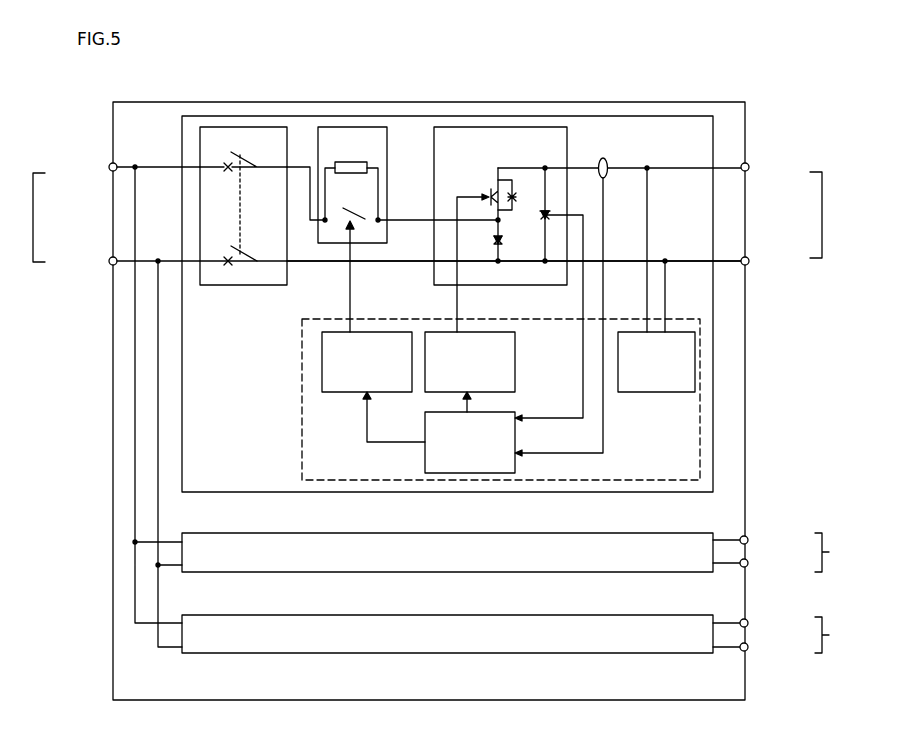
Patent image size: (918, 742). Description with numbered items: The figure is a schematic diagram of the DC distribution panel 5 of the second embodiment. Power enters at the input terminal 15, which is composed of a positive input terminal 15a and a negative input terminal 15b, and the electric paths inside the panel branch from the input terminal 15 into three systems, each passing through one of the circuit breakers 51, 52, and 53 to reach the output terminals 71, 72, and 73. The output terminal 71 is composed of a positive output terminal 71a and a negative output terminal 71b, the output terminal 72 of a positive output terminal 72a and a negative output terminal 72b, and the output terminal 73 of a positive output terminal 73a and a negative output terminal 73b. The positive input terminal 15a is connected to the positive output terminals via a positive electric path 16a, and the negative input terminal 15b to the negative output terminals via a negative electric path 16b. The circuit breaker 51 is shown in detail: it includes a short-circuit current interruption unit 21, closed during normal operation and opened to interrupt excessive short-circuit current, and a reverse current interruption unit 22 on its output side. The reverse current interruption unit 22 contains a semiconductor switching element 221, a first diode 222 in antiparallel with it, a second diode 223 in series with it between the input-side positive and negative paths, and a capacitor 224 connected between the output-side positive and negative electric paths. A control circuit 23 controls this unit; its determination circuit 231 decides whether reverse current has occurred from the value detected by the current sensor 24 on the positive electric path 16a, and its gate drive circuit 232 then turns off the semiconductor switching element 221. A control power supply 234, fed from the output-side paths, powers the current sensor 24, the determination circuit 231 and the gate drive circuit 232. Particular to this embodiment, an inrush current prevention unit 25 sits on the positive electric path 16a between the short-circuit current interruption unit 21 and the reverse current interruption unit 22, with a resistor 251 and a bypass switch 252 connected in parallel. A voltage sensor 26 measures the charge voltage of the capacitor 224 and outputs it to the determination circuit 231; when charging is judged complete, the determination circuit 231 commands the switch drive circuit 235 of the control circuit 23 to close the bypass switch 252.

The DC distribution panel 5 is at (678, 101).
The input terminal 15 is at (40, 218).
The positive input terminal 15a is at (108, 168).
The negative input terminal 15b is at (108, 262).
The positive electric path 16a is at (408, 217).
The negative electric path 16b is at (416, 263).
The short-circuit current interruption unit 21 is at (237, 287).
The reverse current interruption unit 22 is at (502, 228).
The semiconductor switching element 221 is at (488, 177).
The first diode 222 is at (519, 177).
The second diode 223 is at (503, 243).
The capacitor 224 is at (548, 212).
The control circuit 23 is at (476, 399).
The determination circuit 231 is at (517, 437).
The gate drive circuit 232 is at (517, 350).
The control power supply 234 is at (652, 394).
The switch drive circuit 235 is at (340, 396).
The current sensor 24 is at (610, 162).
The inrush current prevention unit 25 is at (355, 216).
The resistor 251 is at (358, 163).
The bypass switch 252 is at (364, 230).
The voltage sensor 26 is at (590, 220).
The circuit breaker 51 is at (258, 493).
The circuit breaker 52 is at (258, 573).
The circuit breaker 53 is at (258, 655).
The output terminal 71 is at (822, 213).
The positive output terminal 71a is at (750, 167).
The negative output terminal 71b is at (750, 261).
The output terminal 72 is at (837, 552).
The positive output terminal 72a is at (750, 540).
The negative output terminal 72b is at (750, 563).
The output terminal 73 is at (837, 635).
The positive output terminal 73a is at (750, 623).
The negative output terminal 73b is at (750, 647).